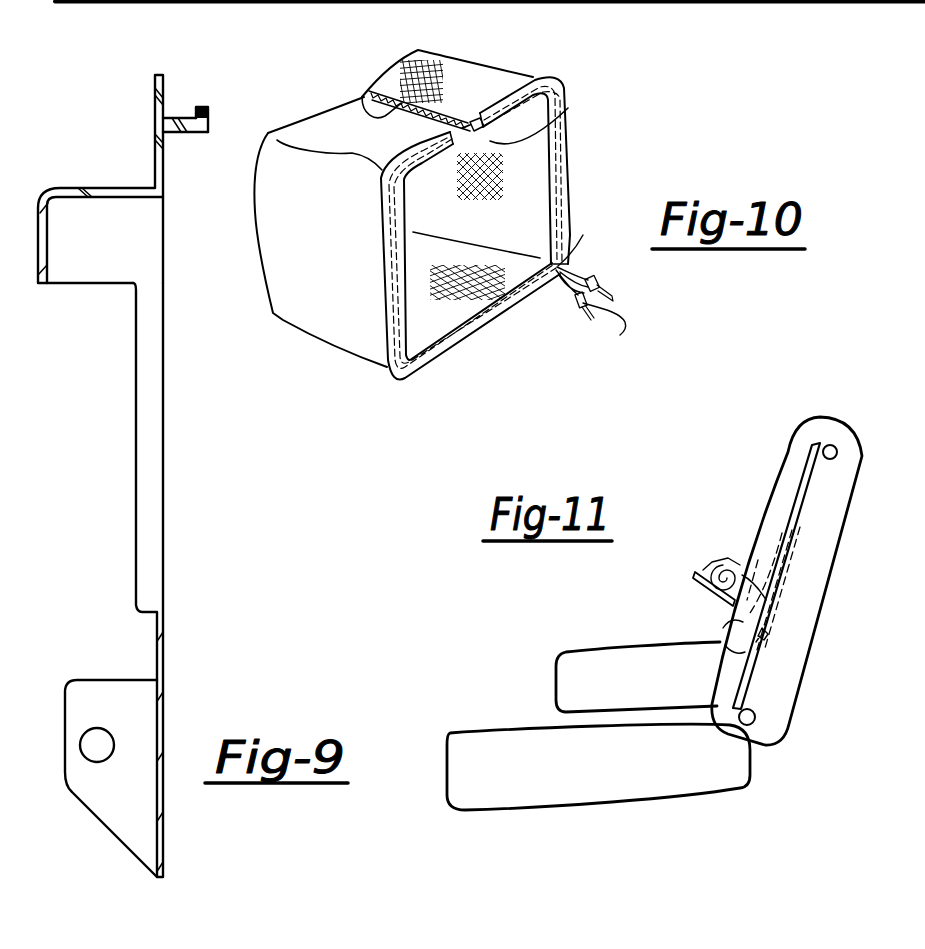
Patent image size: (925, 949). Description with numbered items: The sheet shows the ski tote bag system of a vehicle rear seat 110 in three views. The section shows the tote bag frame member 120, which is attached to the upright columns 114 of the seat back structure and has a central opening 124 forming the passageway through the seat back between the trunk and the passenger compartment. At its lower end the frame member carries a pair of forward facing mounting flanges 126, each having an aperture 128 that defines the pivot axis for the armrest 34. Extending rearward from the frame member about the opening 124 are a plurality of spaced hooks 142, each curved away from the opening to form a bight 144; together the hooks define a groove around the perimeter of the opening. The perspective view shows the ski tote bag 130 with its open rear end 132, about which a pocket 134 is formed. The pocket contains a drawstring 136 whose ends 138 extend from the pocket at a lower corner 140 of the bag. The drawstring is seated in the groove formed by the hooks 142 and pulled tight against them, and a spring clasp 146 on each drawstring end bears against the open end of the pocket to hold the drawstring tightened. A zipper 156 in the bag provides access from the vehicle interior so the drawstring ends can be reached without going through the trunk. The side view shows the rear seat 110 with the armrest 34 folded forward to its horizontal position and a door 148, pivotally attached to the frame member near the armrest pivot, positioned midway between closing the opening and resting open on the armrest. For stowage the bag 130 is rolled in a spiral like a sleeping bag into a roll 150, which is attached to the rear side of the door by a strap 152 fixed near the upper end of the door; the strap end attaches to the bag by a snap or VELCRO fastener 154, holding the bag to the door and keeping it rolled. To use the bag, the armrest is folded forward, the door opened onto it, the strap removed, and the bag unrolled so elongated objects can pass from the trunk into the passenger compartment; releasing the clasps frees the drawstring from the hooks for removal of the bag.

In FIG. 11, the armrest 34 is at (597, 650).
In FIG. 11, the seat back 110 is at (832, 436).
In FIG. 11, the upright columns 114 is at (800, 468).
In FIG. 9, the tote bag frame member 120 is at (145, 155).
In FIG. 11, the tote bag frame member 120 is at (775, 530).
In FIG. 9, the central opening 124 is at (150, 385).
In FIG. 9, the mounting flanges 126 is at (95, 680).
In FIG. 11, the mounting flanges 126 is at (735, 638).
In FIG. 9, the apertures 128 is at (100, 727).
In FIG. 10, the ski tote bag 130 is at (502, 70).
In FIG. 11, the ski tote bag 130 is at (753, 557).
In FIG. 10, the open rear end 132 is at (568, 142).
In FIG. 10, the pocket 134 is at (478, 120).
In FIG. 10, the drawstring 136 is at (565, 140).
In FIG. 10, the drawstring ends 138 is at (590, 270).
In FIG. 10, the lower corner 140 is at (575, 276).
In FIG. 9, the hooks 142 is at (180, 134).
In FIG. 9, the bight 144 is at (180, 98).
In FIG. 10, the spring clasp 146 is at (622, 334).
In FIG. 11, the door 148 is at (697, 593).
In FIG. 11, the roll 150 is at (717, 563).
In FIG. 11, the strap 152 is at (742, 575).
In FIG. 11, the snap or VELCRO fastener 154 is at (745, 632).
In FIG. 10, the zipper 156 is at (364, 100).